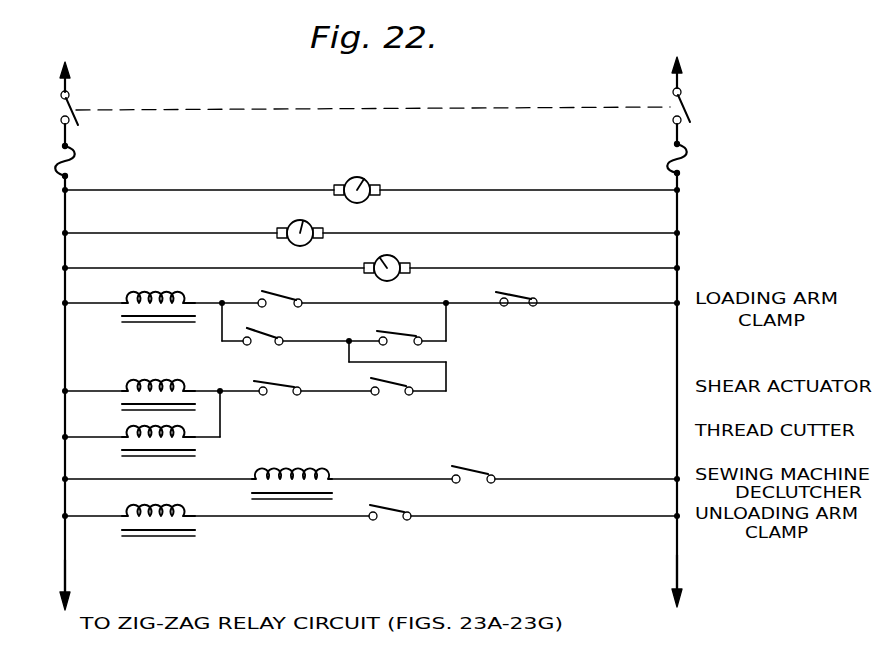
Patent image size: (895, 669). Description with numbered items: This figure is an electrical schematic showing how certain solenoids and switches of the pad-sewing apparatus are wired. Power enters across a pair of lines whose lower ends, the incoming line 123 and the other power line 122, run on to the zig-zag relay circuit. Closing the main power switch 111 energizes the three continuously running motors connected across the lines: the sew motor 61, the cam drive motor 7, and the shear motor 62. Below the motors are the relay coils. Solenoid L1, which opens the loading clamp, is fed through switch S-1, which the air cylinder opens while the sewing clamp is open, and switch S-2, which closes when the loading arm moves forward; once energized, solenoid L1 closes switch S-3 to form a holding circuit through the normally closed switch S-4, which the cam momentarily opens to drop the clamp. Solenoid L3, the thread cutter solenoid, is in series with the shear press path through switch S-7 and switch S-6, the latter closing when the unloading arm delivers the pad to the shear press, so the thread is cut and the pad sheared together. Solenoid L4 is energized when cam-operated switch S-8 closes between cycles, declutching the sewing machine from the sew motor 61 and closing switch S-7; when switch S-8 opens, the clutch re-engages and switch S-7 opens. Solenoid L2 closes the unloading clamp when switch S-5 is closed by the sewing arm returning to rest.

The main power switch 111 is at (74, 100).
The sew motor 61 is at (360, 177).
The cam drive motor 7 is at (302, 221).
The shear motor 62 is at (380, 258).
The power line 122 is at (65, 572).
The incoming line 123 is at (677, 565).
The solenoid L1 is at (263, 290).
The thread cutter solenoid L3 is at (177, 378).
The solenoid L4 is at (305, 460).
The solenoid L2 is at (178, 504).
The switch S-1 is at (270, 326).
The switch S-2 is at (413, 322).
The switch S-3 is at (288, 280).
The switch S-4 is at (516, 292).
The switch S-5 is at (392, 501).
The switch S-6 is at (391, 394).
The switch S-7 is at (272, 467).
The switch S-8 is at (482, 458).